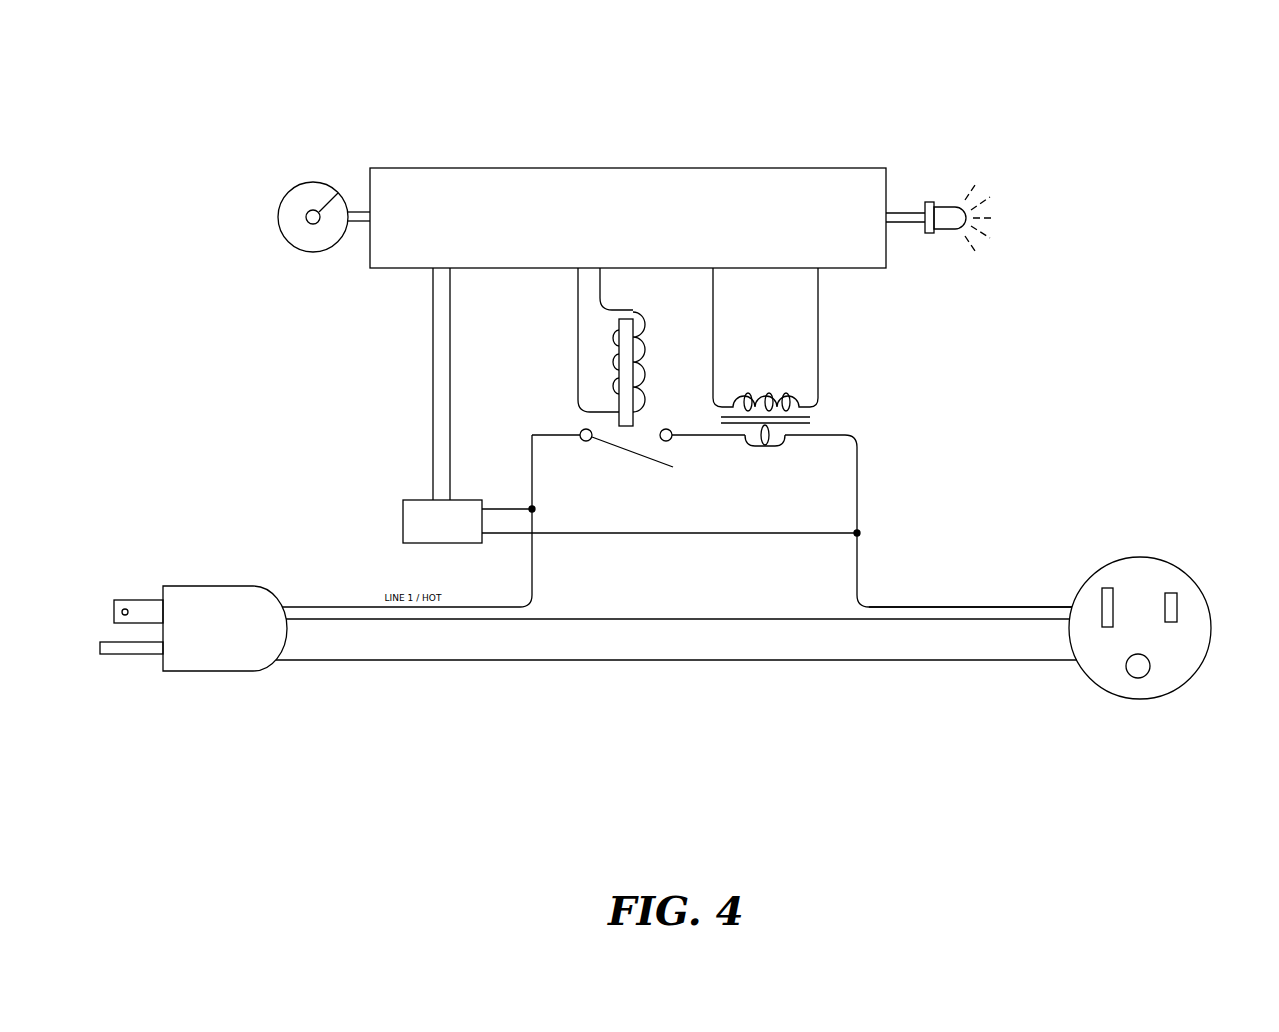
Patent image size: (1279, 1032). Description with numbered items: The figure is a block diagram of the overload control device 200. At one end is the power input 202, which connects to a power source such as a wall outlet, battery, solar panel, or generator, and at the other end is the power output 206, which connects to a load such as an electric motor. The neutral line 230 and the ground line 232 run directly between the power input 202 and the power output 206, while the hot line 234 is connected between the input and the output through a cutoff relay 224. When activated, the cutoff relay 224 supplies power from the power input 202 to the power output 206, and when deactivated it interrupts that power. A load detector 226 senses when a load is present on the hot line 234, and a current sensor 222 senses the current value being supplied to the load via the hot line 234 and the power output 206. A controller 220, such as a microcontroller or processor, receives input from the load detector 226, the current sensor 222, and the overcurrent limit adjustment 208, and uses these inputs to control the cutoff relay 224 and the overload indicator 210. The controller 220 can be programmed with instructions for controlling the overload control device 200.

The overload control device 200 is at (932, 77).
The power input 202 is at (146, 590).
The power output 206 is at (1142, 560).
The overcurrent limit adjustment 208 is at (292, 182).
The overload indicator 210 is at (948, 203).
The controller 220 is at (617, 176).
The current sensor 222 is at (830, 410).
The cutoff relay 224 is at (560, 407).
The load detector 226 is at (402, 502).
The neutral line 230 is at (787, 621).
The ground line 232 is at (867, 661).
The hot line 234 is at (922, 608).